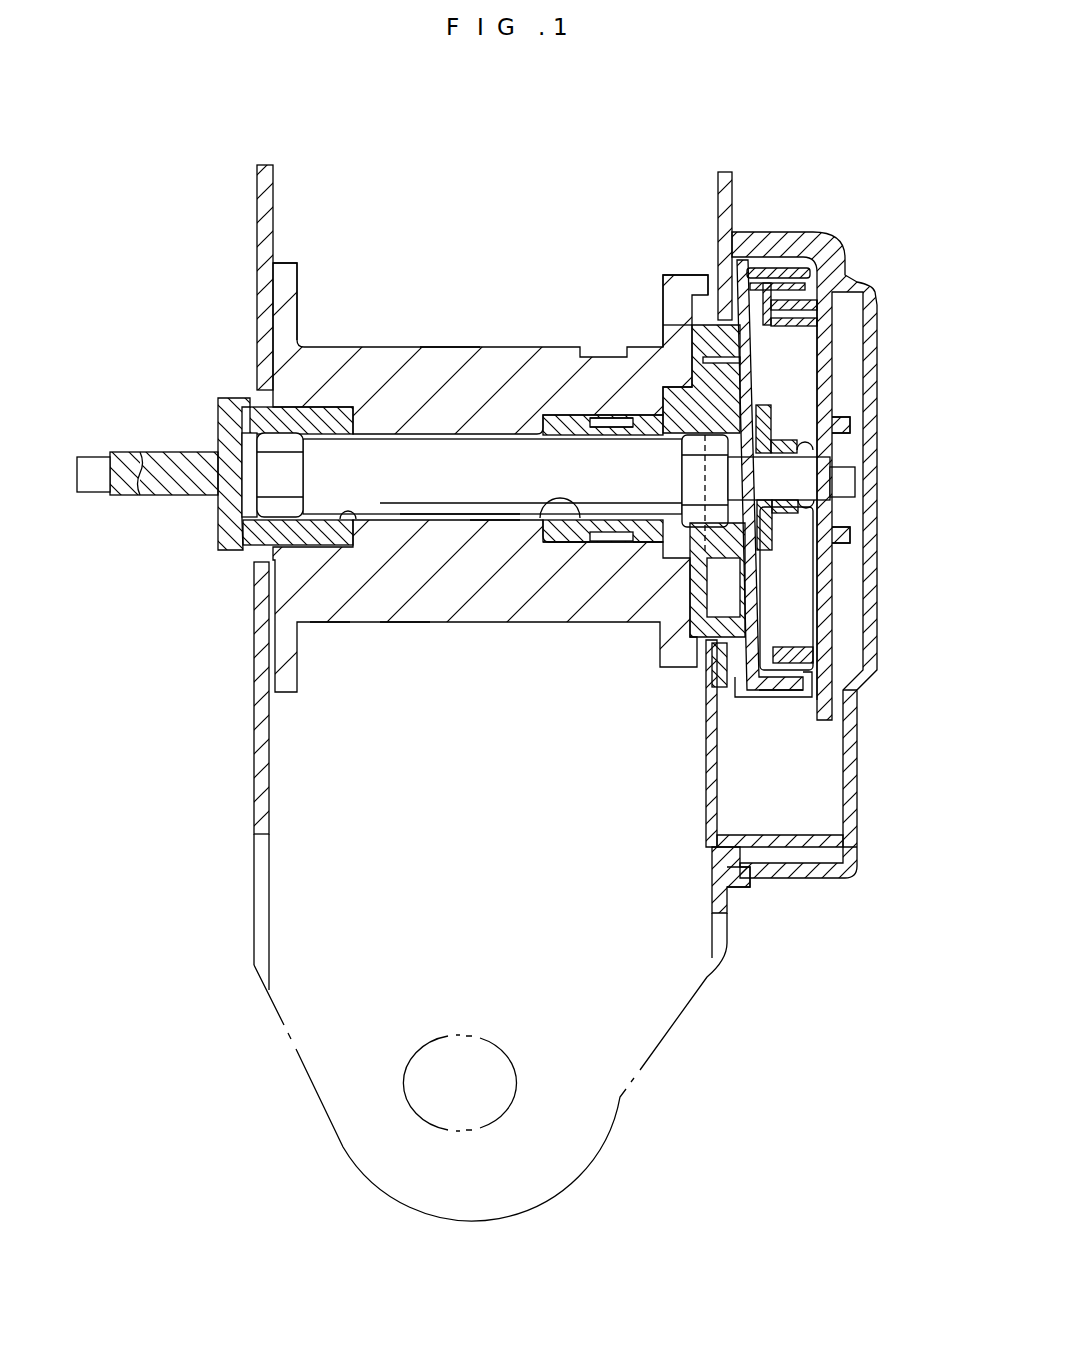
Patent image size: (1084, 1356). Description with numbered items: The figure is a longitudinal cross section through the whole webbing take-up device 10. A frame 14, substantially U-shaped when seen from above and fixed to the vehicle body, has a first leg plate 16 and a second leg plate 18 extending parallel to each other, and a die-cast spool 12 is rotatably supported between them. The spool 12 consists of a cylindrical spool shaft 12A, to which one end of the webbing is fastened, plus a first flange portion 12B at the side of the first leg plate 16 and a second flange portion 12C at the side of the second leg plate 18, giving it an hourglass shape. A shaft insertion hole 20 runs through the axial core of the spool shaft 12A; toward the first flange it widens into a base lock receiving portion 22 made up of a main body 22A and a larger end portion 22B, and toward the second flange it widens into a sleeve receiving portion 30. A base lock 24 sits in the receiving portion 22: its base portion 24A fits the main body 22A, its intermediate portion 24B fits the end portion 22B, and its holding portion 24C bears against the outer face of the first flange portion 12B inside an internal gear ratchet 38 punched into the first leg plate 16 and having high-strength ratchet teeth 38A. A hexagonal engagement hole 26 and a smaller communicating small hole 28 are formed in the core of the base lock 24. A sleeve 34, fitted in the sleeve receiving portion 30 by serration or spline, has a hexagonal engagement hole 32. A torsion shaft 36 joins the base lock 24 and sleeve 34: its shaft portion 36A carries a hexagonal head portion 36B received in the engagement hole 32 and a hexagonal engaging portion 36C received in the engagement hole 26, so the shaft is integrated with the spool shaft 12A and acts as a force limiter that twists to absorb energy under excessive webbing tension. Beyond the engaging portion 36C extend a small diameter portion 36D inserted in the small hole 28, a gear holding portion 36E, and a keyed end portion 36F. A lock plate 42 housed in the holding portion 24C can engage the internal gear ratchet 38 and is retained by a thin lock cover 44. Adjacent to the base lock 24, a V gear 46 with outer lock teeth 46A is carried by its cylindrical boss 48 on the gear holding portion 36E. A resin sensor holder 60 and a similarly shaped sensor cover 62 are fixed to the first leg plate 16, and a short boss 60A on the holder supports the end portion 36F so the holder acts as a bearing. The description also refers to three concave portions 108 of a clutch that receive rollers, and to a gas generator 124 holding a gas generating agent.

The webbing take-up device 10 is at (636, 128).
The spool 12 is at (378, 336).
The spool shaft 12A is at (447, 355).
The first flange portion 12B is at (680, 283).
The second flange portion 12C is at (290, 283).
The frame 14 is at (250, 705).
The first leg plate 16 is at (730, 172).
The second leg plate 18 is at (270, 182).
The shaft insertion hole 20 is at (405, 535).
The base lock receiving portion 22 is at (652, 698).
The main body 22A is at (560, 545).
The end portion 22B is at (622, 545).
The base lock 24 is at (713, 655).
The base portion 24A is at (575, 414).
The intermediate portion 24B is at (676, 395).
The holding portion 24C is at (665, 283).
The engagement hole 26 is at (495, 525).
The small hole 28 is at (775, 512).
The sleeve receiving portion 30 is at (327, 413).
The engagement hole 32 is at (330, 545).
The sleeve 34 is at (165, 500).
The torsion shaft 36 is at (500, 434).
The shaft portion 36A is at (460, 522).
The head portion 36B is at (275, 515).
The engaging portion 36C is at (682, 480).
The small diameter portion 36D is at (773, 447).
The gear holding portion 36E is at (834, 440).
The end portion 36F is at (850, 487).
The internal gear ratchet 38 is at (679, 851).
The ratchet teeth 38A is at (707, 700).
The lock plate 42 is at (732, 382).
The lock cover 44 is at (741, 307).
The V gear 46 is at (770, 607).
The lock teeth 46A is at (785, 692).
The boss 48 is at (850, 537).
The sensor holder 60 is at (838, 390).
The boss 60A is at (852, 447).
The sensor cover 62 is at (880, 367).
The concave portions 108 is at (707, 815).
The gas generator 124 is at (850, 772).